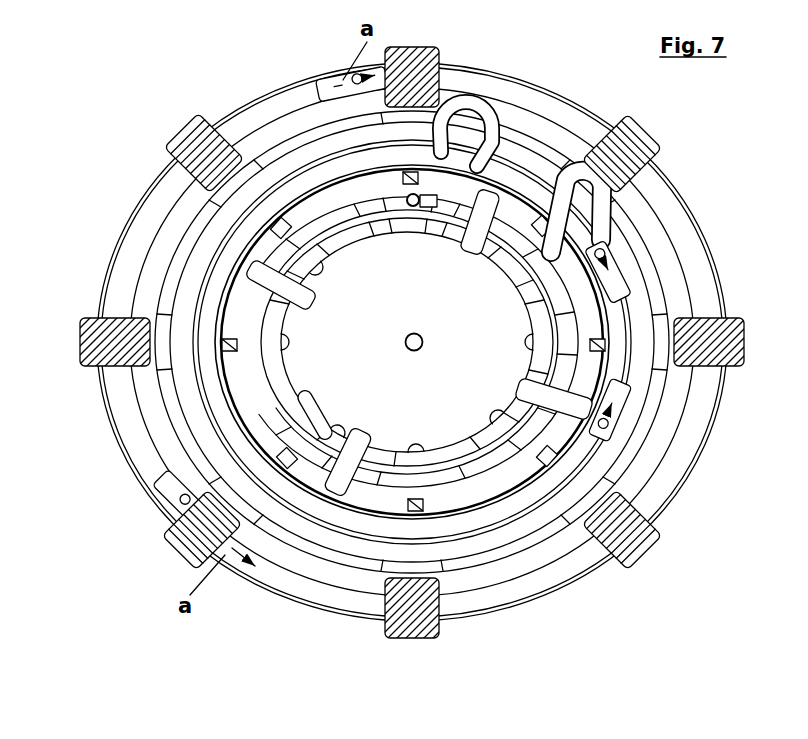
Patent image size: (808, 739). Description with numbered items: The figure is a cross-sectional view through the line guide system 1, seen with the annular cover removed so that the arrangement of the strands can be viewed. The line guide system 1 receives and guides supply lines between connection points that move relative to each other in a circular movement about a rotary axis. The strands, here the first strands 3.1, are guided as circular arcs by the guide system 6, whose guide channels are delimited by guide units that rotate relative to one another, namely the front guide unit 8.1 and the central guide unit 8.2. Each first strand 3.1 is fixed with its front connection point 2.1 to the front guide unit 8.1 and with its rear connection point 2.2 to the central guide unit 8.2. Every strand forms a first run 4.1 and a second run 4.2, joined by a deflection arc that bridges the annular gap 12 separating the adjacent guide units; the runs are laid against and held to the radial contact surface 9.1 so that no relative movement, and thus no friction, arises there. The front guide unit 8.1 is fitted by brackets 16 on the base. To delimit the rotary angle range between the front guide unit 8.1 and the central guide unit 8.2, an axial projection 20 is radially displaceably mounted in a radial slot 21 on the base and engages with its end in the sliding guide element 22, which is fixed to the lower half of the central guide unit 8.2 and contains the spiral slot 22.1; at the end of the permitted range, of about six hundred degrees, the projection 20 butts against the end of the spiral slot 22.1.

The line guide system 1 is at (150, 90).
The guide system 6 is at (213, 110).
The front guide unit 8.1 is at (723, 265).
The central guide unit 8.2 is at (658, 305).
The annular gap 12 is at (658, 285).
The first run 4.1 is at (673, 207).
The radial contact surface 9.1 is at (650, 335).
The sliding guide element 22 is at (353, 177).
The spiral slot 22.1 is at (367, 232).
The radial slot 21 is at (412, 220).
The axial projection 20 is at (413, 200).
The first strand 3.1 is at (665, 172).
The second run 4.2 is at (593, 232).
The front connection point 2.1 is at (318, 83).
The rear connection point 2.2 is at (607, 270).
The brackets 16 is at (627, 567).